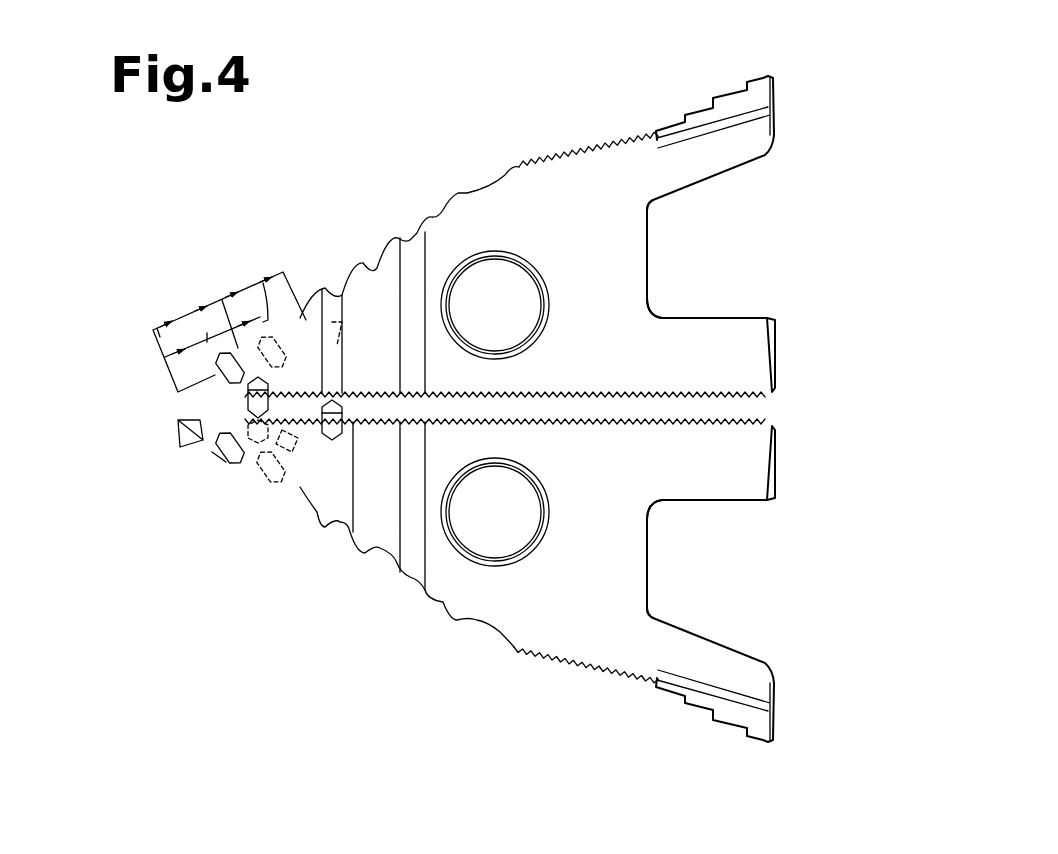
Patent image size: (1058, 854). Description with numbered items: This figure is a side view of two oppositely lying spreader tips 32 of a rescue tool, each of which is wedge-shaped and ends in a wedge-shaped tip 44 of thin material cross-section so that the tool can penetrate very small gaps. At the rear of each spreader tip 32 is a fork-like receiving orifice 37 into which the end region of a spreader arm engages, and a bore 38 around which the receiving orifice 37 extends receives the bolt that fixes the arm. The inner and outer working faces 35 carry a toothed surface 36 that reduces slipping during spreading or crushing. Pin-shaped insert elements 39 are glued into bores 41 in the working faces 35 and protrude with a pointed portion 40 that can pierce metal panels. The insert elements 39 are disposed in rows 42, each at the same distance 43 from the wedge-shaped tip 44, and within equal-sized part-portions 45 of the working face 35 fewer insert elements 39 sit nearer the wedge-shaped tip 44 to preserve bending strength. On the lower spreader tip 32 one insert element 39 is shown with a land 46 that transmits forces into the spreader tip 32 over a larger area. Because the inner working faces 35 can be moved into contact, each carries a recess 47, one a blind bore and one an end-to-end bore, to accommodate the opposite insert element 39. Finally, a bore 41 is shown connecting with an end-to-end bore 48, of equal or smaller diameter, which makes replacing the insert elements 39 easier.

The spreader tip 32 is at (600, 105).
The working face 35 is at (518, 168).
The toothed surface 36 is at (428, 187).
The receiving orifice 37 is at (738, 257).
The bore 38 is at (503, 295).
The insert element 39 is at (302, 318).
The protruding portion 40 is at (282, 330).
The bore 41 is at (232, 433).
The row 42 is at (263, 287).
The distance 43 is at (206, 337).
The wedge-shaped tip 44 is at (232, 0).
The part-portion 45 is at (183, 317).
The land 46 is at (293, 337).
The recess 47 is at (336, 334).
The end-to-end bore 48 is at (220, 457).